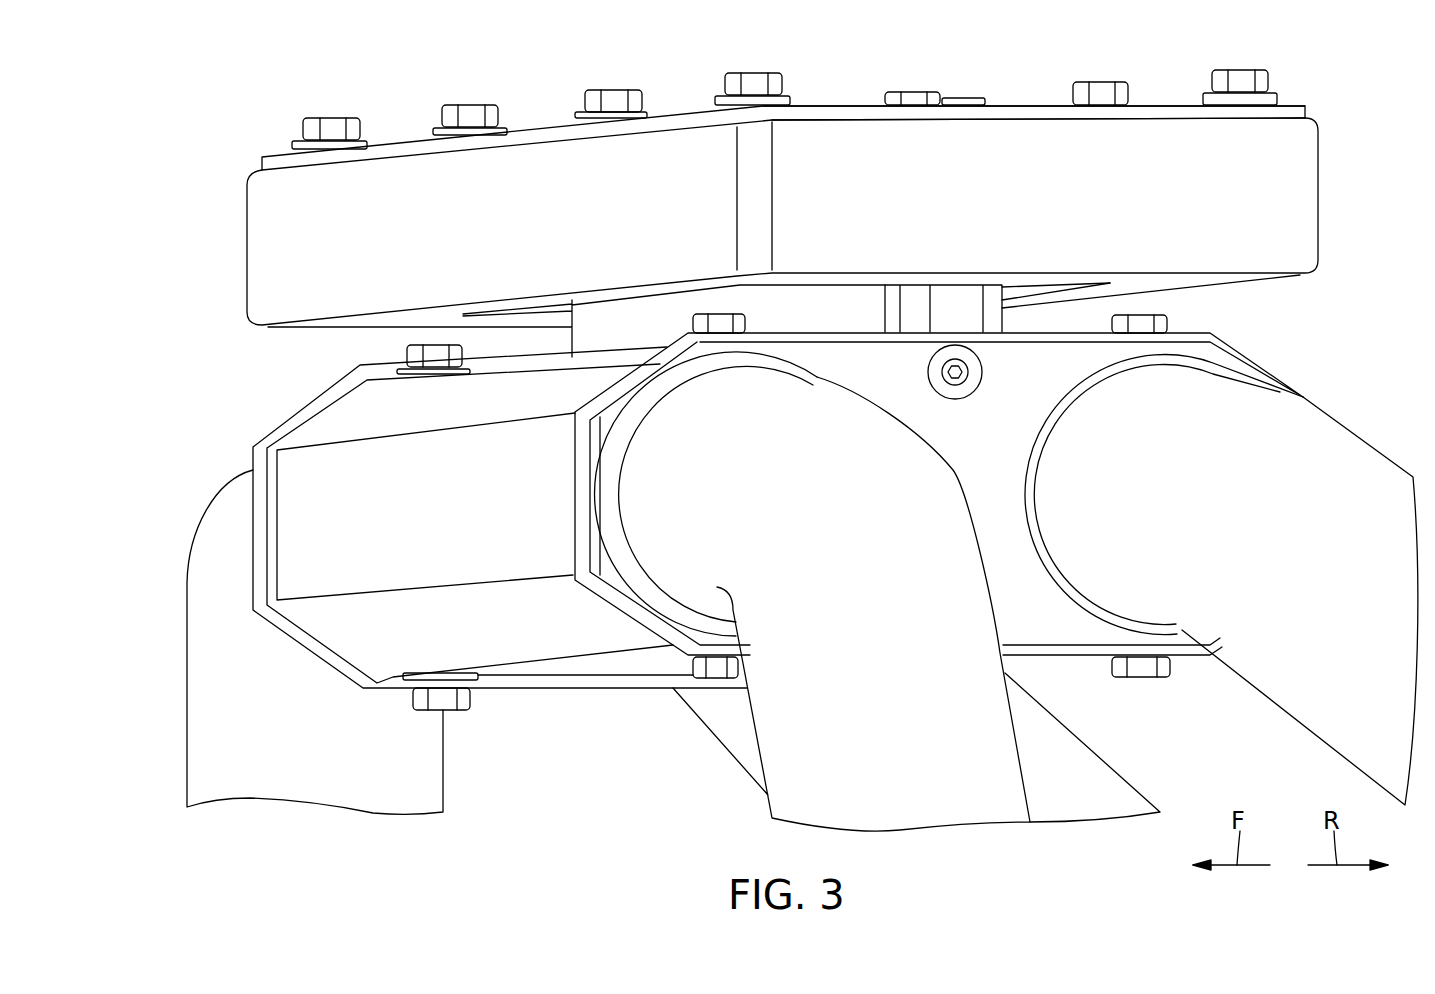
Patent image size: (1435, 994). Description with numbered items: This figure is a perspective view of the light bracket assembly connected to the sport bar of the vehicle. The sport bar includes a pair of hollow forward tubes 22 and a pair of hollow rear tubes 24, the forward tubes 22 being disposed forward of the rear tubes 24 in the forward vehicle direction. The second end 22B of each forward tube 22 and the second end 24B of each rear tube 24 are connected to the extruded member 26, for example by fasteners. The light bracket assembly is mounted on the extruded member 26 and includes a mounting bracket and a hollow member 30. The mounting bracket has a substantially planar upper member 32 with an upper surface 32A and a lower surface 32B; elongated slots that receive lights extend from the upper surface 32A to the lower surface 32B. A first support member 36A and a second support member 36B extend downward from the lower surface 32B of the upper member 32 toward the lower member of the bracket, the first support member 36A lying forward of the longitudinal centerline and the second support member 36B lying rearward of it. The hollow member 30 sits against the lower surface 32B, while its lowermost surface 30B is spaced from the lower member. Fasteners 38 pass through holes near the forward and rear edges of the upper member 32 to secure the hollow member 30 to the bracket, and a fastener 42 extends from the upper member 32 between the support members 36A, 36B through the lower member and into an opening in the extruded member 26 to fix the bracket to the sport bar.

The forward tube 22 is at (188, 652).
The second end of forward tube 22B is at (655, 480).
The rear tube 24 is at (1080, 735).
The second end of rear tube 24B is at (1235, 405).
The extruded member 26 is at (305, 407).
The hollow member 30 is at (1320, 180).
The lowermost surface of hollow member 30B is at (1178, 280).
The upper member 32 is at (1290, 105).
The upper surface of upper member 32A is at (1150, 105).
The lower surface of upper member 32B is at (1172, 120).
The first support member 36A is at (1005, 320).
The second support member 36B is at (885, 300).
The fastener 38 is at (330, 117).
The fastener 42 is at (905, 92).